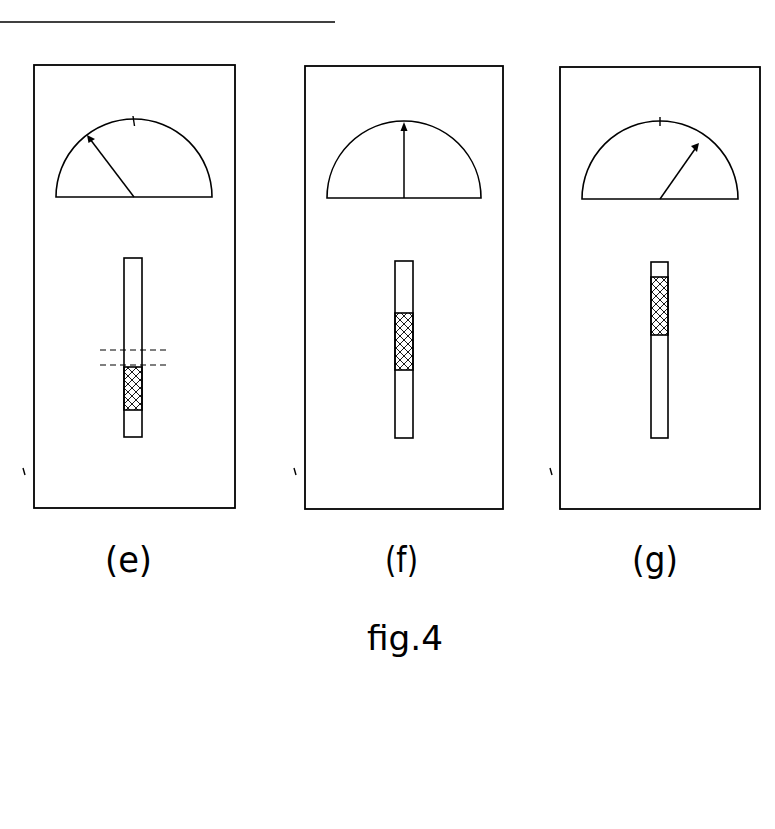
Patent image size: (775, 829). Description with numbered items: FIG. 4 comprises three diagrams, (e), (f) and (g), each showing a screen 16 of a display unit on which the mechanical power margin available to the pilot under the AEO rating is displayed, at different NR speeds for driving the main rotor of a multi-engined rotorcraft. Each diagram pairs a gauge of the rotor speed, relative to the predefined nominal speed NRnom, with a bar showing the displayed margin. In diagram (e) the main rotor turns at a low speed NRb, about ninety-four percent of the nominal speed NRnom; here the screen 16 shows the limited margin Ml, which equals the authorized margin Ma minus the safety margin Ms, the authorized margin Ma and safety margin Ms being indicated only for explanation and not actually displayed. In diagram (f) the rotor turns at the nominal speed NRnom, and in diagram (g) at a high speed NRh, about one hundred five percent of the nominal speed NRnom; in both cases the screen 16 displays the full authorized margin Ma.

The screen 16 is at (391, 287).
The nominal speed NRnom is at (400, 148).
The low rotational speed indication NRb is at (107, 156).
The high rotational speed indication NRh is at (693, 158).
The authorized margin Ma is at (365, 323).
The safety margin Ms is at (156, 360).
The limited margin Ml is at (123, 388).